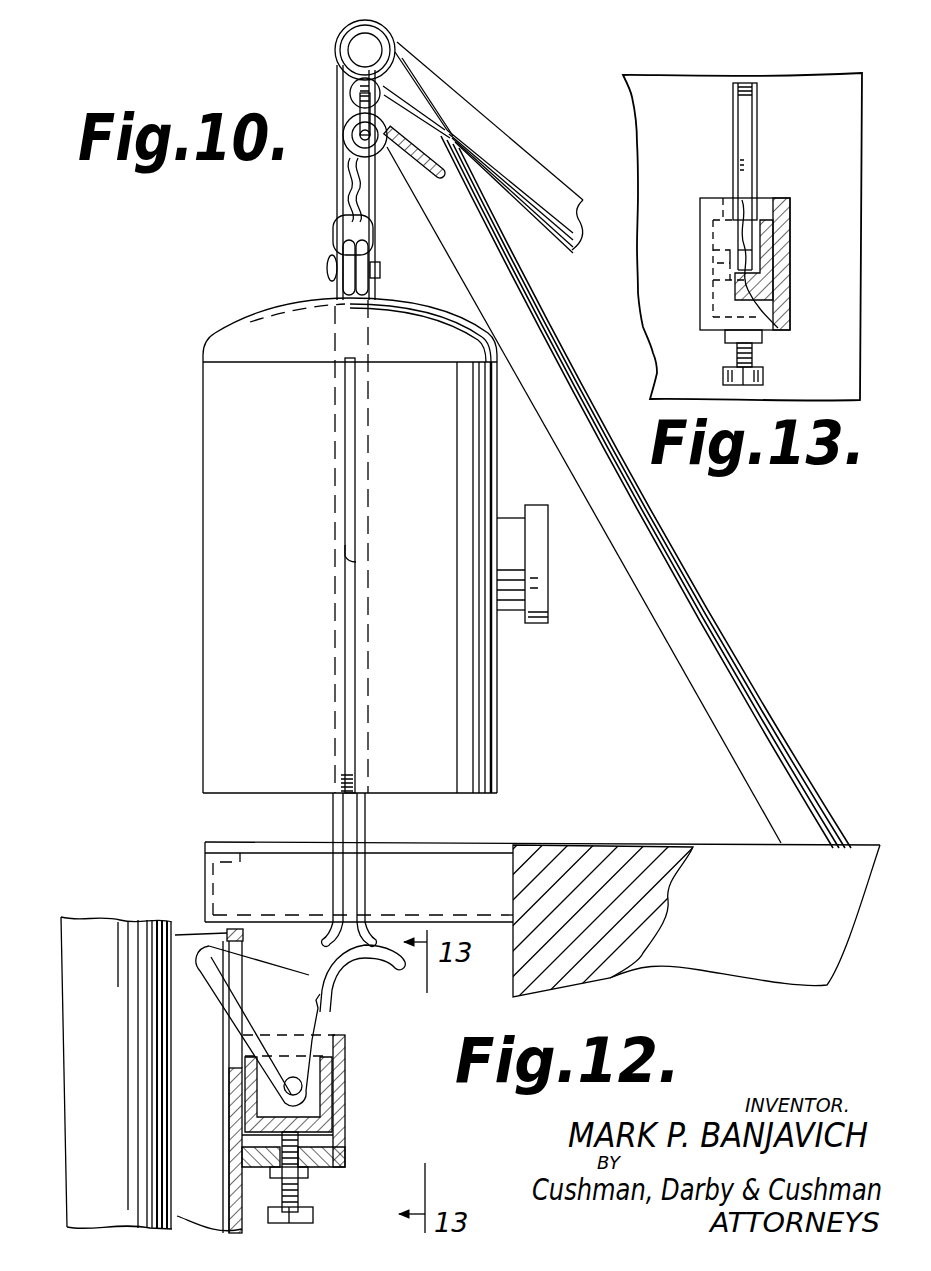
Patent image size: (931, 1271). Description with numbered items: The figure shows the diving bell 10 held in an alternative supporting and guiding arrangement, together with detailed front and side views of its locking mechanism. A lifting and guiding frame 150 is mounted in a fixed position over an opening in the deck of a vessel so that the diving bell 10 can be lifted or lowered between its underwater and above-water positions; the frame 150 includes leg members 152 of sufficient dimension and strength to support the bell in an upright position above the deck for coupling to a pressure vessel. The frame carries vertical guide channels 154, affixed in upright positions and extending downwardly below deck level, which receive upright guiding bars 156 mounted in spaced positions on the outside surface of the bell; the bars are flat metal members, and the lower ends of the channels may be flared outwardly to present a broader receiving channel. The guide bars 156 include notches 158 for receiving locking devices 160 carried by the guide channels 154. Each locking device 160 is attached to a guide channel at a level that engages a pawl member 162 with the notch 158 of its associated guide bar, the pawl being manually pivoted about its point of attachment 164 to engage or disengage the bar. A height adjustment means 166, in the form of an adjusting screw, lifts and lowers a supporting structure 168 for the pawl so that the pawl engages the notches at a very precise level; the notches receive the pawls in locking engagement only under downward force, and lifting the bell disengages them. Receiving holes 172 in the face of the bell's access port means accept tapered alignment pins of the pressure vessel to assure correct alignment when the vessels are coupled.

In FIG. 10, the diving bell 10 is at (230, 507).
In FIG. 10, the lifting and guiding frame 150 is at (556, 112).
In FIG. 10, the leg members 152 is at (702, 618).
In FIG. 10, the vertical guide channels 154 is at (366, 820).
In FIG. 12, the vertical guide channels 154 is at (225, 1222).
In FIG. 10, the upright guiding bars 156 is at (352, 421).
In FIG. 12, the upright guiding bars 156 is at (212, 1056).
In FIG. 10, the notches 158 is at (347, 550).
In FIG. 12, the notches 158 is at (300, 995).
In FIG. 12, the locking devices 160 is at (352, 1106).
In FIG. 13, the locking devices 160 is at (694, 286).
In FIG. 12, the pawl member 162 is at (263, 953).
In FIG. 13, the pawl member 162 is at (748, 103).
In FIG. 12, the point of attachment 164 is at (296, 1077).
In FIG. 13, the point of attachment 164 is at (753, 250).
In FIG. 12, the height adjustment means 166 is at (320, 1217).
In FIG. 13, the height adjustment means 166 is at (768, 357).
In FIG. 12, the supporting structure 168 is at (342, 1126).
In FIG. 13, the supporting structure 168 is at (780, 223).
In FIG. 10, the receiving holes 172 is at (548, 563).